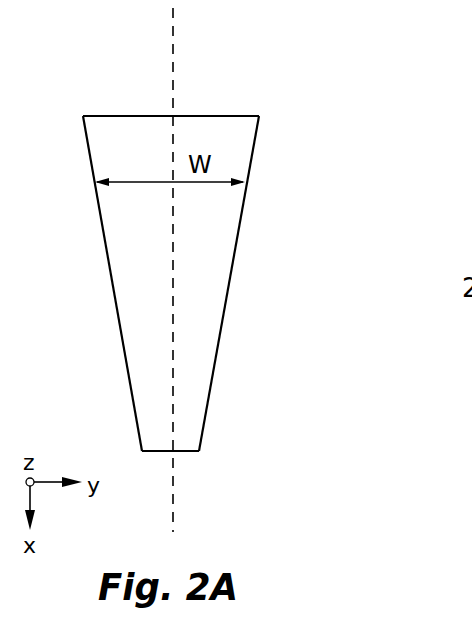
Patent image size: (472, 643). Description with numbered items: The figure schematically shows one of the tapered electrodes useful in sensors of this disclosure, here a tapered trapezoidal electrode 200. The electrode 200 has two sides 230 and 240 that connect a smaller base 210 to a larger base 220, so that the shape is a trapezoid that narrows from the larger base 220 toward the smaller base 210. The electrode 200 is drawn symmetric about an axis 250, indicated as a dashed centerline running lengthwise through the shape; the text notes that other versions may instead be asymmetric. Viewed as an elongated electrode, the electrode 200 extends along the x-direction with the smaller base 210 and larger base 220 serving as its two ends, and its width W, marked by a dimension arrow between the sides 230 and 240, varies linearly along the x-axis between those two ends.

The tapered trapezoidal electrode 200 is at (173, 278).
The smaller base 210 is at (189, 452).
The larger base 220 is at (218, 110).
The side 230 is at (237, 255).
The side 240 is at (108, 262).
The axis 250 is at (173, 30).